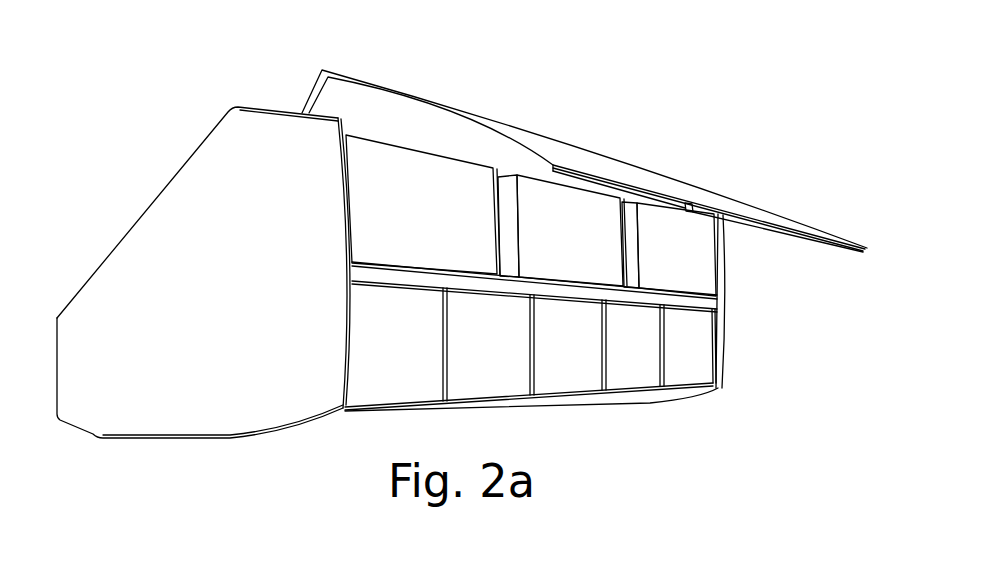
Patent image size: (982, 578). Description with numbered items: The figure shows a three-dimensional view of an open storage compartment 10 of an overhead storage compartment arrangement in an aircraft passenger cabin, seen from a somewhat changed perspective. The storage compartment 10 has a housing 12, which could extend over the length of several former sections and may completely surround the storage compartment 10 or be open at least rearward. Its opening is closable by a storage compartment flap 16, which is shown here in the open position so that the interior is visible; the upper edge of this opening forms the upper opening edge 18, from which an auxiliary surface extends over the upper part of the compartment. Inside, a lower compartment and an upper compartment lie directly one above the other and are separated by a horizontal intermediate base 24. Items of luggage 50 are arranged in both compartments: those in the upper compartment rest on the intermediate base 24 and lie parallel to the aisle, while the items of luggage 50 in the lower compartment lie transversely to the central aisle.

The storage compartment 10 is at (553, 124).
The housing 12 is at (148, 237).
The storage compartment flap 16 is at (632, 172).
The upper opening edge 18 is at (314, 112).
The intermediate base 24 is at (398, 268).
The items of luggage 50 is at (413, 222).